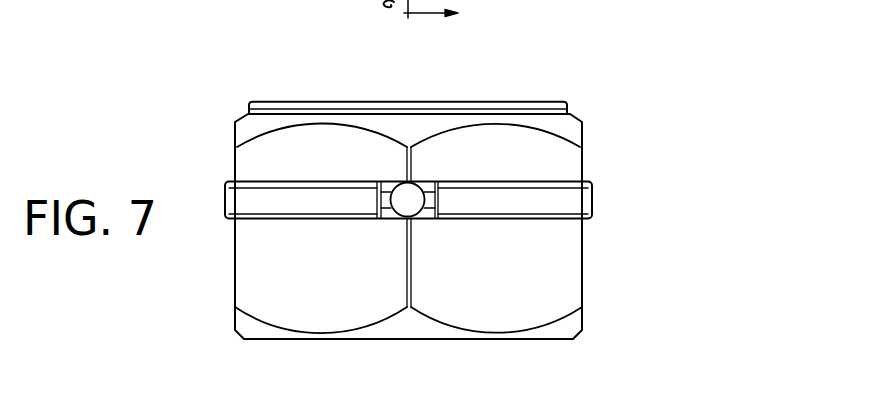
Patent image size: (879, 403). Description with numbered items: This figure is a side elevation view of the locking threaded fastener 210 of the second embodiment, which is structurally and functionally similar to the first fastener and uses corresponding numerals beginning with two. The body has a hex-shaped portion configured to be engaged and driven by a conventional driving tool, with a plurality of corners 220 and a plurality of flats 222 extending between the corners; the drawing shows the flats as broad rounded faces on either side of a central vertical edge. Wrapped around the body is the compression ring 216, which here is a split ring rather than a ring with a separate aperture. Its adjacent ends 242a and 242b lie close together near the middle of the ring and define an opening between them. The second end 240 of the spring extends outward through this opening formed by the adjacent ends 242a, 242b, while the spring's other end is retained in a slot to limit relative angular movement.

The locking threaded fastener 210 is at (675, 53).
The compression ring 216 is at (592, 197).
The corners 220 is at (580, 270).
The flats 222 is at (349, 272).
The second end of the spring 240 is at (410, 197).
The first adjacent end of the compression ring 242a is at (383, 187).
The second adjacent end of the compression ring 242b is at (432, 193).